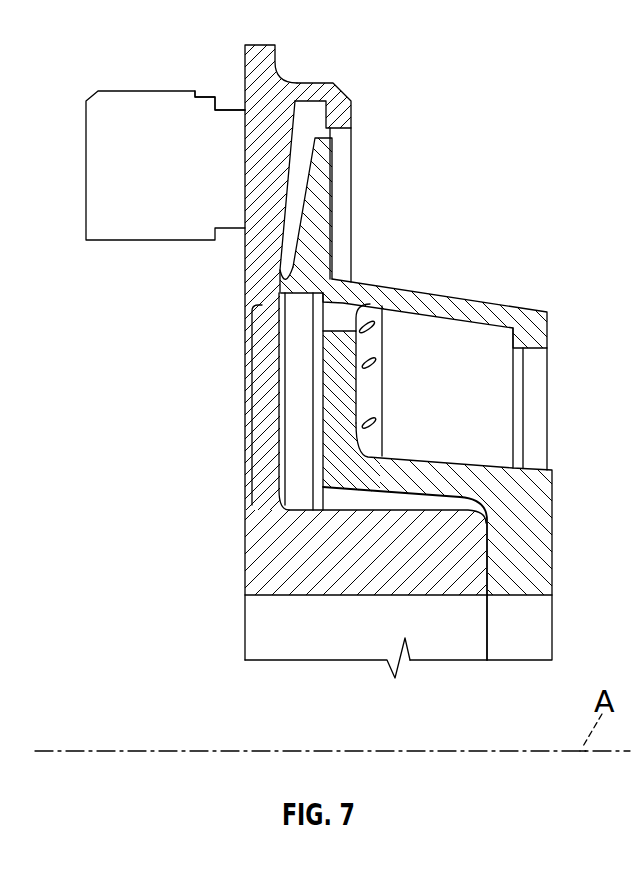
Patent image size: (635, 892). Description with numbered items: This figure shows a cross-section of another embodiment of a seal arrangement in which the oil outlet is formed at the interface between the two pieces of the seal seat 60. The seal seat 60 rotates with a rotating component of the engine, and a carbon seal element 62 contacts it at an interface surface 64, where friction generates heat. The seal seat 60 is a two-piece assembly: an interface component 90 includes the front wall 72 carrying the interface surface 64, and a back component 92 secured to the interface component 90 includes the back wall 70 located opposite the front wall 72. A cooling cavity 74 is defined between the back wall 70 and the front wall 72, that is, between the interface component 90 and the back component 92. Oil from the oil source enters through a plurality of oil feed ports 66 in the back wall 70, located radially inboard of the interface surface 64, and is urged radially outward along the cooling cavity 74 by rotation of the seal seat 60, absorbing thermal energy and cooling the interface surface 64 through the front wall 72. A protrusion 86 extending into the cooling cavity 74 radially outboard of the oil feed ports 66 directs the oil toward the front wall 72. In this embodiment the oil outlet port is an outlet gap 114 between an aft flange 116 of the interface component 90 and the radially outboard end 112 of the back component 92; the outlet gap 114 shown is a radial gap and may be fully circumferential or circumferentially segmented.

The seal seat 60 is at (370, 361).
The seal element 62 is at (165, 176).
The interface surface 64 is at (245, 127).
The oil feed ports 66 is at (349, 322).
The back wall 70 is at (268, 416).
The front wall 72 is at (330, 425).
The cooling cavity 74 is at (289, 266).
The protrusion 86 is at (305, 278).
The interface component 90 is at (222, 352).
The back component 92 is at (405, 182).
The radially outboard end 112 is at (321, 172).
The outlet gap 114 is at (347, 136).
The aft flange 116 is at (346, 115).